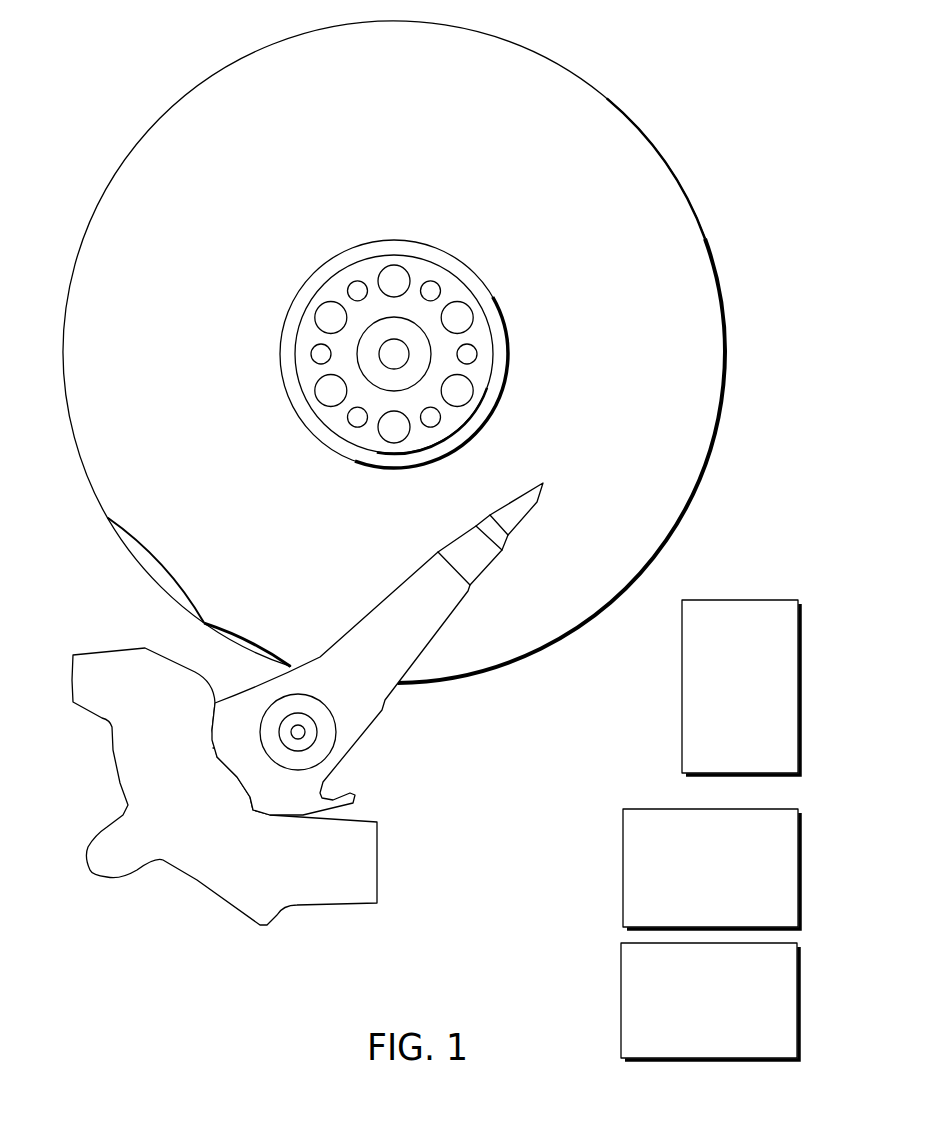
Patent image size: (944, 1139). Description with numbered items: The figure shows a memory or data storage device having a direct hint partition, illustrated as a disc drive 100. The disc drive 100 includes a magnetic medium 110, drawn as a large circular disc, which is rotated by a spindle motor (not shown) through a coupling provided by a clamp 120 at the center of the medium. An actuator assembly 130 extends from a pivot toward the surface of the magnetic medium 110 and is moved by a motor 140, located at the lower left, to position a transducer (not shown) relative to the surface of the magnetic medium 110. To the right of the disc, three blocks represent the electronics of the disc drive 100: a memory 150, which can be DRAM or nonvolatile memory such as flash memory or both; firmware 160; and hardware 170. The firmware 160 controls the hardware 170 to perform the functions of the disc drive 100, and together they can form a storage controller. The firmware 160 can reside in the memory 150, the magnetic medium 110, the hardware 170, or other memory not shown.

The disc drive 100 is at (128, 63).
The magnetic medium 110 is at (633, 122).
The clamp 120 is at (340, 252).
The actuator assembly 130 is at (355, 593).
The motor 140 is at (96, 776).
The memory 150 is at (682, 710).
The firmware 160 is at (623, 884).
The hardware 170 is at (621, 1000).